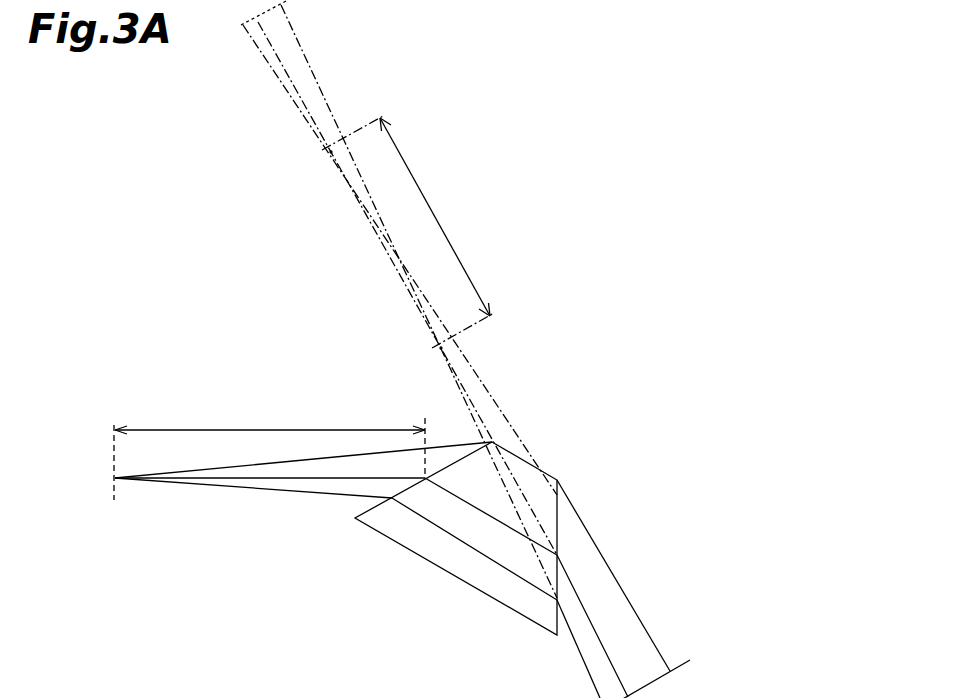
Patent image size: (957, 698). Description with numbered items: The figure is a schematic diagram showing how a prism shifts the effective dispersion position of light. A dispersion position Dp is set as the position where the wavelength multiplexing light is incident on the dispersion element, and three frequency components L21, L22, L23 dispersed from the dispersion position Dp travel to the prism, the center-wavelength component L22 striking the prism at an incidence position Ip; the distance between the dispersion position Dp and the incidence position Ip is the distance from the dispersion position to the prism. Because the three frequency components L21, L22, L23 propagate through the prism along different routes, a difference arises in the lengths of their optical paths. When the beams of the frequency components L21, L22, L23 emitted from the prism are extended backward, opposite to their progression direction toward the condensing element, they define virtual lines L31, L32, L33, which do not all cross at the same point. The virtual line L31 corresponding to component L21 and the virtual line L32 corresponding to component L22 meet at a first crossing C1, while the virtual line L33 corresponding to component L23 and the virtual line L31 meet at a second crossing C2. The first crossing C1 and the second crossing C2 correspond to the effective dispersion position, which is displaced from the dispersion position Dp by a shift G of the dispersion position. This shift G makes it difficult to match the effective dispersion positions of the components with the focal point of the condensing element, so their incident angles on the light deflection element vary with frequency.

The frequency component L21 is at (223, 480).
The frequency component L22 is at (165, 485).
The frequency component L23 is at (327, 465).
The virtual line L31 is at (522, 490).
The virtual line L32 is at (528, 528).
The virtual line L33 is at (521, 446).
The first crossing C1 is at (445, 347).
The second crossing C2 is at (331, 150).
The shift of the dispersion position G is at (430, 203).
The dispersion position Dp is at (262, 448).
The incidence position Ip is at (425, 437).